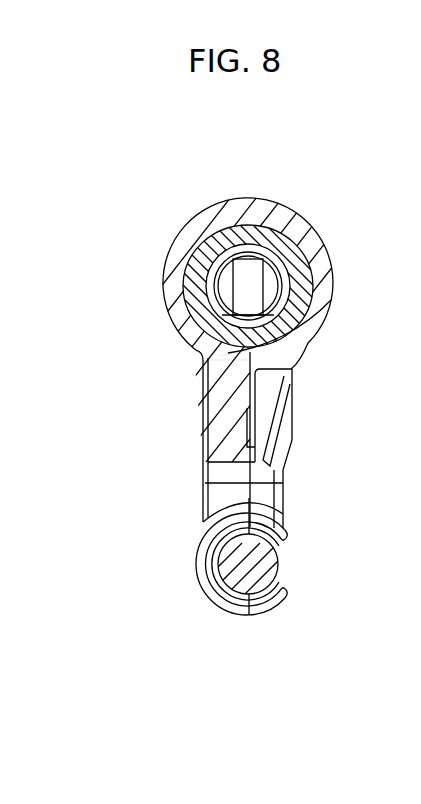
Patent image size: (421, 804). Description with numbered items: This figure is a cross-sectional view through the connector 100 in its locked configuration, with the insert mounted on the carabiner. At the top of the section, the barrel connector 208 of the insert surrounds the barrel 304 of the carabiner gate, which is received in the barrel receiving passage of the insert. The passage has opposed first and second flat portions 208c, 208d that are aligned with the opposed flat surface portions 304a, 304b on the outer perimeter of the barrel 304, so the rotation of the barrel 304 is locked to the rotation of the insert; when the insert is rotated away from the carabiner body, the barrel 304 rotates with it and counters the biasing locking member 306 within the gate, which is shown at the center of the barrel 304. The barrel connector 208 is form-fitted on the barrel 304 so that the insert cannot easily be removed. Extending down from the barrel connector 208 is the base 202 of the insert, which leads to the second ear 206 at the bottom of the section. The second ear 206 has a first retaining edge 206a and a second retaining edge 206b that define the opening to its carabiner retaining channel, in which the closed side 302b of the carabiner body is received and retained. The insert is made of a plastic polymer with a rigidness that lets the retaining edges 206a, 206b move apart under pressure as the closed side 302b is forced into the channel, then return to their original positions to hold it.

The connector 100 is at (140, 221).
The base 202 is at (221, 430).
The second ear 206 is at (205, 583).
The first retaining edge 206a is at (280, 599).
The second retaining edge 206b is at (273, 531).
The barrel connector 208 is at (292, 221).
The first flat portion 208c is at (236, 224).
The second flat portion 208d is at (240, 351).
The closed side 302b is at (262, 562).
The barrel 304 is at (306, 250).
The first flat surface portion 304a is at (258, 226).
The second flat surface portion 304b is at (288, 333).
The biasing locking member 306 is at (264, 288).